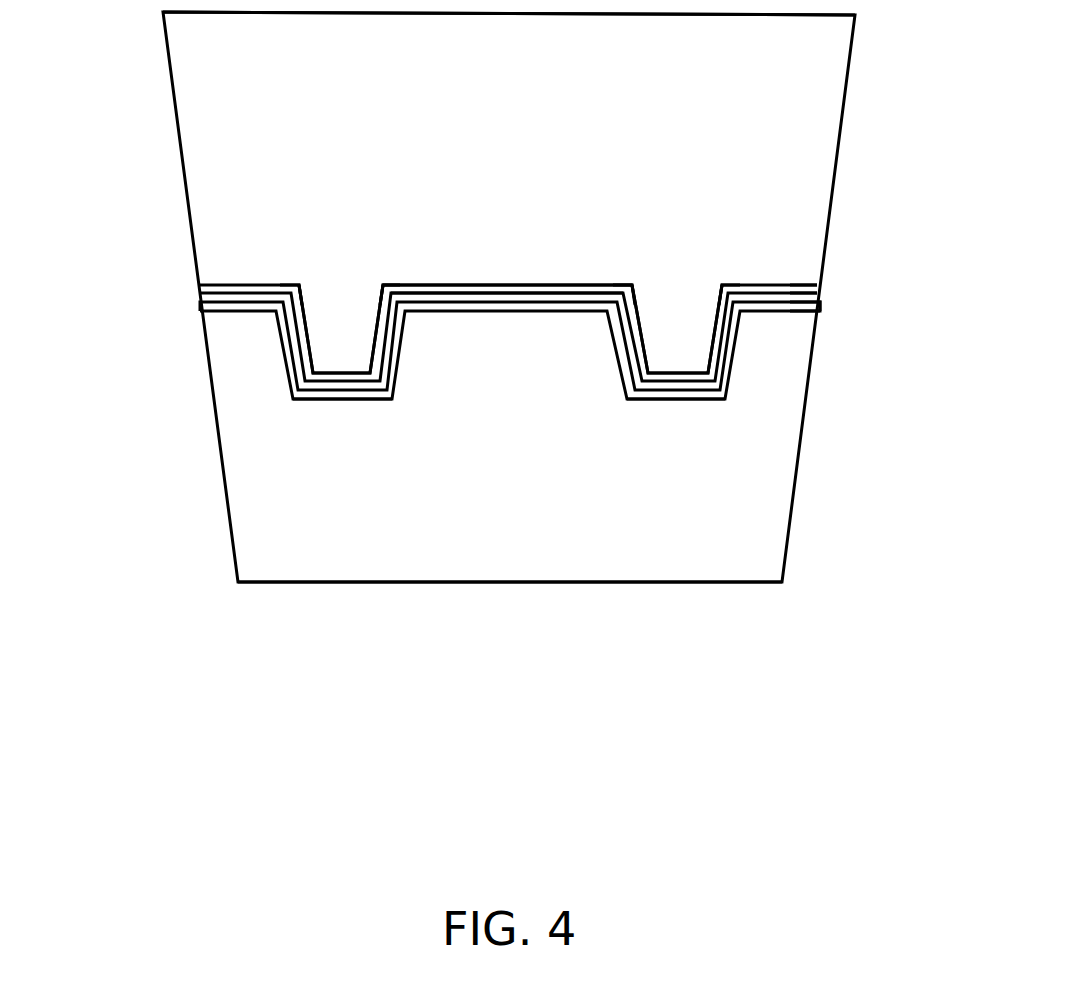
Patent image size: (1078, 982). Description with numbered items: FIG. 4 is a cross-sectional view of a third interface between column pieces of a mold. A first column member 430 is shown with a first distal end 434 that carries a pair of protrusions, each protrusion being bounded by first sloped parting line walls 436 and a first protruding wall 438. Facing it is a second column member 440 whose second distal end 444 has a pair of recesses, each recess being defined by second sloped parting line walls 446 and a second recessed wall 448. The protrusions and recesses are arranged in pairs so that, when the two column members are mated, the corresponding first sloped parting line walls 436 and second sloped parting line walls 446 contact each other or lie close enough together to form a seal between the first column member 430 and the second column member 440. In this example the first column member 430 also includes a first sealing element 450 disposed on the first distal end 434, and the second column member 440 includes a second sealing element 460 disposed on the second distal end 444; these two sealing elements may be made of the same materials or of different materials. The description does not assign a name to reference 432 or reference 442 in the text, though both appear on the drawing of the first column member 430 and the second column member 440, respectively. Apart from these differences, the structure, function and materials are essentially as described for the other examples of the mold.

The first column member 430 is at (560, 297).
The top surface 432 is at (446, 58).
The first distal end 434 is at (812, 298).
The first sloped parting line walls 436 is at (305, 305).
The first protruding wall 438 is at (513, 265).
The second column member 440 is at (567, 575).
The substrate 442 is at (446, 422).
The second distal end 444 is at (508, 289).
The second sloped parting line walls 446 is at (462, 384).
The second recessed wall 448 is at (509, 448).
The first sealing element 450 is at (507, 341).
The second sealing element 460 is at (240, 305).